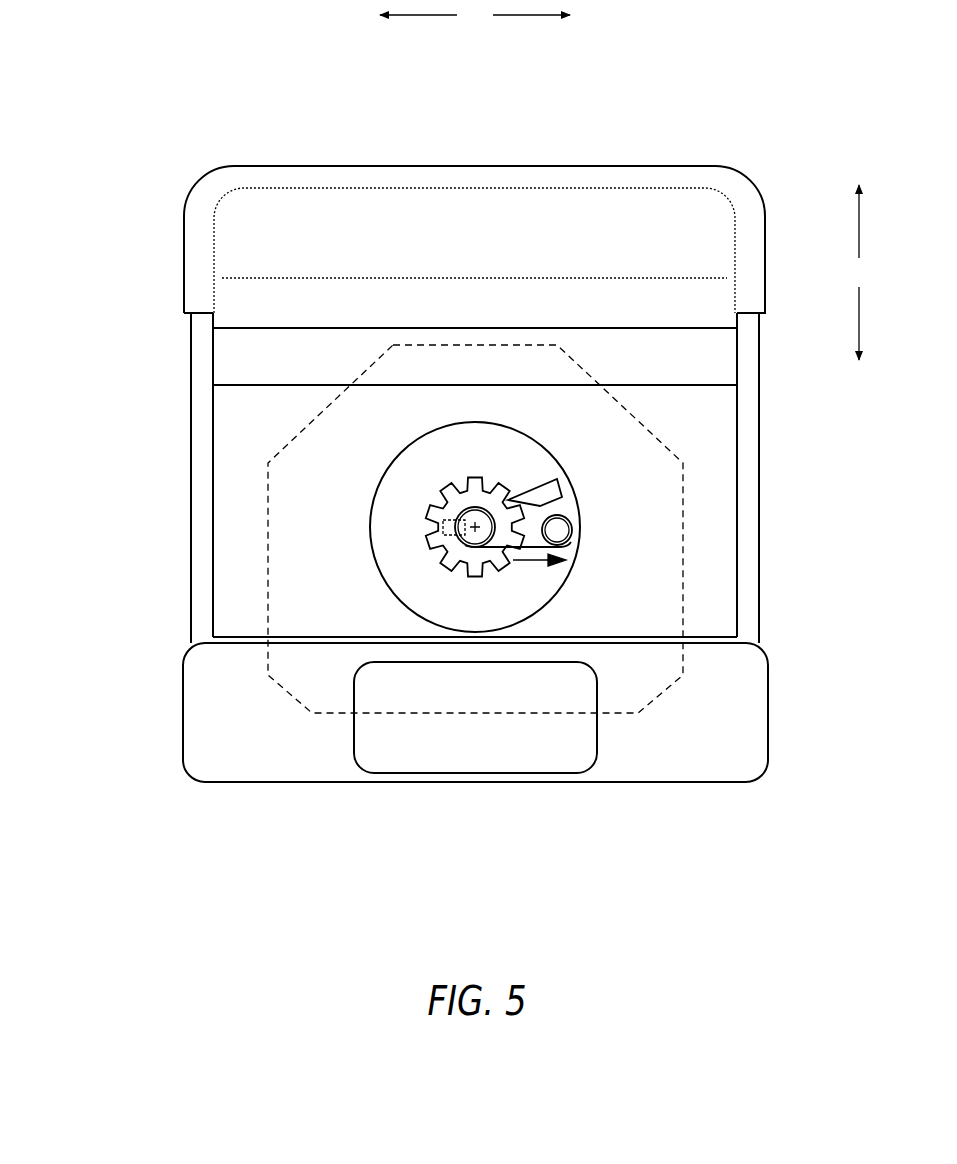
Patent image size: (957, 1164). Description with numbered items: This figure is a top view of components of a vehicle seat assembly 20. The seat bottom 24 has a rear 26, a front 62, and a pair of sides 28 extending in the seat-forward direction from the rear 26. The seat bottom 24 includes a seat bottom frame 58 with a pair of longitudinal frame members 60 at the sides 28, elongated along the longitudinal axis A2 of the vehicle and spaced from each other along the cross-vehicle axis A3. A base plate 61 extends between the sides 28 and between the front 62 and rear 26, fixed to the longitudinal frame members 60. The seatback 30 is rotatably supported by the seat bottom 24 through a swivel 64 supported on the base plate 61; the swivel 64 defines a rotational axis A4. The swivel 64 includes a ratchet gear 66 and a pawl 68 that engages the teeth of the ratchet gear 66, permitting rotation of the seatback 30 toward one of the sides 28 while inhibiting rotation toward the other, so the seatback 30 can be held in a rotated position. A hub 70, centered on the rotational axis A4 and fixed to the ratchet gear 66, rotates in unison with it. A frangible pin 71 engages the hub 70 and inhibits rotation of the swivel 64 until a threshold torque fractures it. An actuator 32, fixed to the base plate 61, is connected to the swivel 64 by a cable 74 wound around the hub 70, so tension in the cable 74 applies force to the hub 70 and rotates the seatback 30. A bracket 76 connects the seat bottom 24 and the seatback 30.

The assembly 20 is at (90, 536).
The seat bottom 24 is at (160, 446).
The rear 26 is at (193, 643).
The sides 28 is at (192, 583).
The seatback 30 is at (257, 770).
The actuator 32 is at (575, 537).
The seat bottom frame 58 is at (790, 445).
The longitudinal frame members 60 is at (200, 522).
The base plate 61 is at (245, 420).
The front 62 is at (527, 170).
The swivel 64 is at (378, 482).
The ratchet gear 66 is at (475, 478).
The pawl 68 is at (557, 480).
The hub 70 is at (476, 520).
The frangible pin 71 is at (437, 505).
The cable 74 is at (532, 550).
The bracket 76 is at (682, 597).
The longitudinal axis A2 is at (859, 272).
The cross-vehicle axis A3 is at (475, 16).
The rotational axis A4 is at (475, 527).